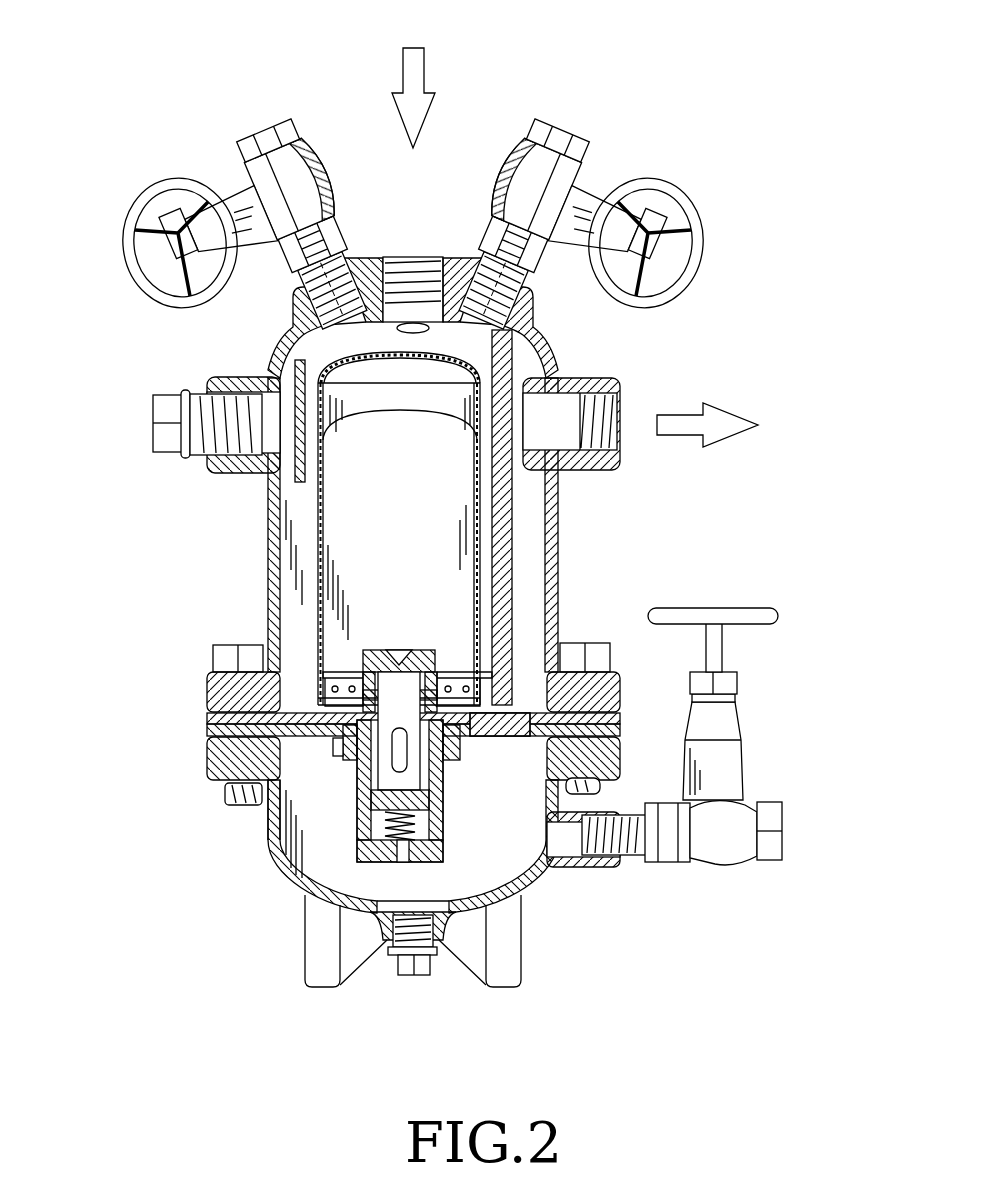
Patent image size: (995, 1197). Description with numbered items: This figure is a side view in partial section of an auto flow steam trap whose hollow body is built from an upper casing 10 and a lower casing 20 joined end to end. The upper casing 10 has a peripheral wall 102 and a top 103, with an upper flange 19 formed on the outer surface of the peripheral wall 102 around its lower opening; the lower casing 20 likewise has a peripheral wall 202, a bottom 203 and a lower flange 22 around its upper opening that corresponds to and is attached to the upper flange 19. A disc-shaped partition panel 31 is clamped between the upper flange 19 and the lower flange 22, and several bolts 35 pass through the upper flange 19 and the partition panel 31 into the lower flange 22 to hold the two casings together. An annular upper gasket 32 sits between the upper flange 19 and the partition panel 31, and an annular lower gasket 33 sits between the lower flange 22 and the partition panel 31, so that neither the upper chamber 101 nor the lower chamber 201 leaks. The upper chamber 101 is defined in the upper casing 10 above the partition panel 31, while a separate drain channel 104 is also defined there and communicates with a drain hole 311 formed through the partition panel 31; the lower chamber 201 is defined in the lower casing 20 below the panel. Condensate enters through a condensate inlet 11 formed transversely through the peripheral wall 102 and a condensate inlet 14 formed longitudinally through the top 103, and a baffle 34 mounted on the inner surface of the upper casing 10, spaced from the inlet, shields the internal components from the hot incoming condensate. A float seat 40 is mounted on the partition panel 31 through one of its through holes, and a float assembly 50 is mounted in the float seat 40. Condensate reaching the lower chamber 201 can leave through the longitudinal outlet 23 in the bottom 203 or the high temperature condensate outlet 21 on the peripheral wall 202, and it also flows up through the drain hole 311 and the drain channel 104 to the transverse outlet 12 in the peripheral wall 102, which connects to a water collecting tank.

The upper casing 10 is at (202, 508).
The upper chamber 101 is at (292, 554).
The peripheral wall 102 is at (272, 603).
The top 103 is at (456, 258).
The drain channel 104 is at (536, 504).
The condensate inlet 11 is at (260, 430).
The transverse outlet 12 is at (604, 412).
The condensate inlet 14 is at (401, 257).
The upper flange 19 is at (220, 690).
The lower casing 20 is at (252, 863).
The lower chamber 201 is at (296, 830).
The peripheral wall 202 is at (274, 810).
The bottom 203 is at (338, 904).
The high temperature condensate outlet 21 is at (567, 835).
The lower flange 22 is at (220, 747).
The longitudinal outlet 23 is at (414, 928).
The partition panel 31 is at (620, 732).
The drain hole 311 is at (522, 727).
The upper gasket 32 is at (620, 724).
The lower gasket 33 is at (575, 736).
The baffle 34 is at (300, 384).
The bolts 35 is at (225, 653).
The float seat 40 is at (347, 840).
The float assembly 50 is at (358, 520).